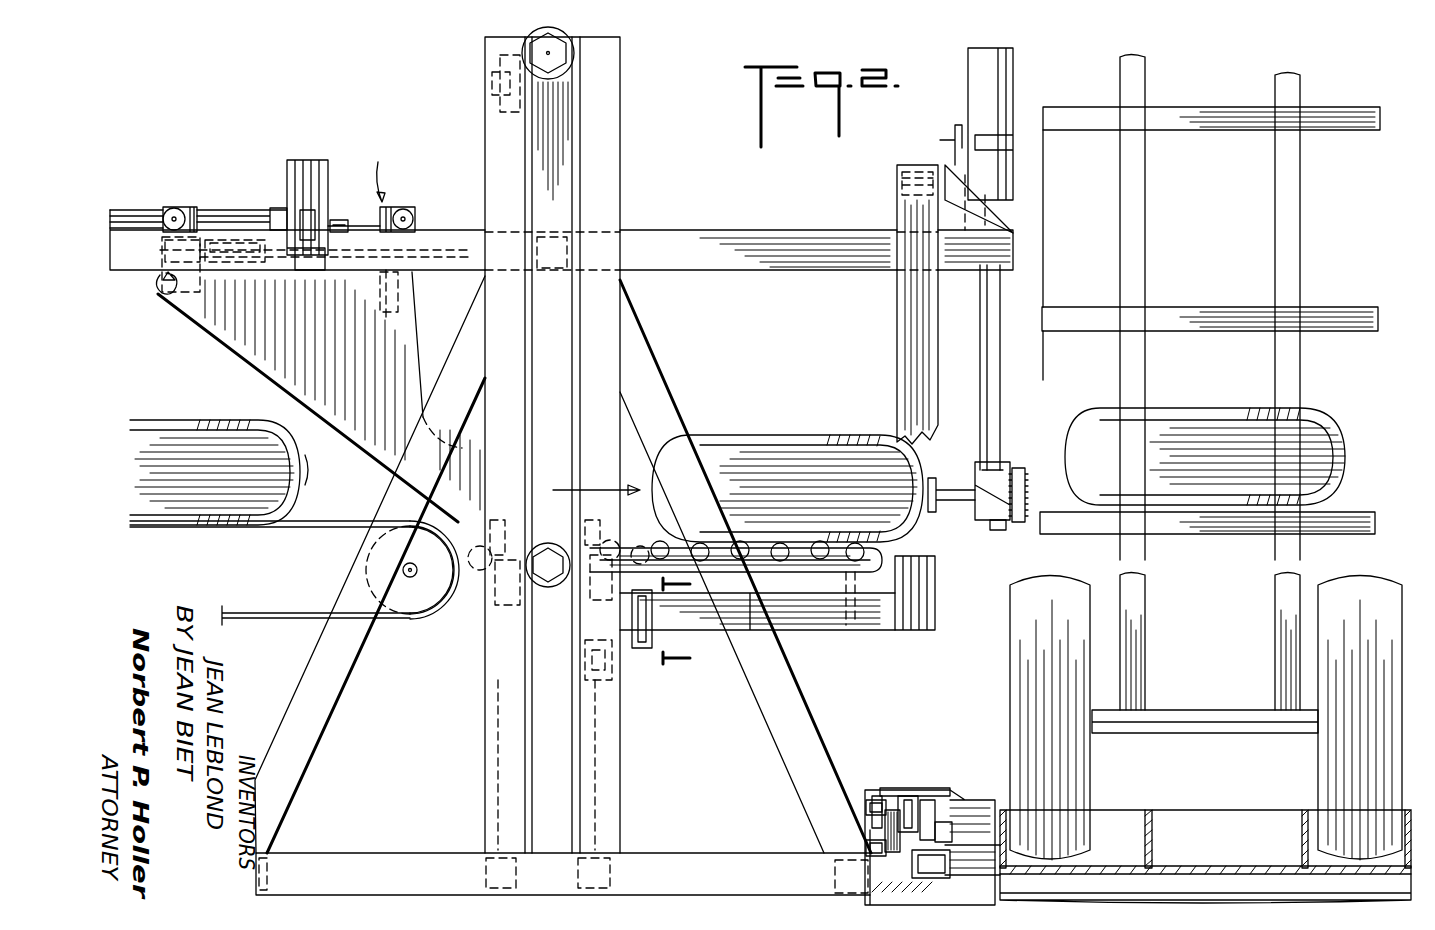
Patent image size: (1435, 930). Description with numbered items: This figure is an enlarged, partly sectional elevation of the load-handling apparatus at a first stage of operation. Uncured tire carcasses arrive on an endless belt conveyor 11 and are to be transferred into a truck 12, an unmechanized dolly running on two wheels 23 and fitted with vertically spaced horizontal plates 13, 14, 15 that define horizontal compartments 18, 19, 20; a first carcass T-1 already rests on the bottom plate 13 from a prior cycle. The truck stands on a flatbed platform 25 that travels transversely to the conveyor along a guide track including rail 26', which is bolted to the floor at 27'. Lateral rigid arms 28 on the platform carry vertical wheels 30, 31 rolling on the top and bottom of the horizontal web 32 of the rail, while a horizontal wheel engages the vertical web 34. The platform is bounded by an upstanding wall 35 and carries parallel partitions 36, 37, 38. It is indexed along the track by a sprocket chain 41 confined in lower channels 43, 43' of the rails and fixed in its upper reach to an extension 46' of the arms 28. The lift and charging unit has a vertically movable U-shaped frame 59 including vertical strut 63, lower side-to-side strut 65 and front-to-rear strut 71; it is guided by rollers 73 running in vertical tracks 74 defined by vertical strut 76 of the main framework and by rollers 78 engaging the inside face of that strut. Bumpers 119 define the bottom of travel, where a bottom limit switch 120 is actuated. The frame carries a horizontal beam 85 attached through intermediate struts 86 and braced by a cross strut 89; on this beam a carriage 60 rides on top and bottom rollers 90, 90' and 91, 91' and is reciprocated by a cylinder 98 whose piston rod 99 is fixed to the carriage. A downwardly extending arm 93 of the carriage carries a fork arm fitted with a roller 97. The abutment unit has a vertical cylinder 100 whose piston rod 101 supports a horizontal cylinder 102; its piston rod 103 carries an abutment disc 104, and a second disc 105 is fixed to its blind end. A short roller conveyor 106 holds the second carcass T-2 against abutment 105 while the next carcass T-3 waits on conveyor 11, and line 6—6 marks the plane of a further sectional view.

The section line 6 is at (684, 621).
The endless belt conveyor 11 is at (302, 512).
The truck 12 is at (1215, 708).
The bottom plate 13 is at (1355, 520).
The horizontal plate 14 is at (1350, 320).
The horizontal plate 15 is at (1345, 120).
The horizontal compartment 18 is at (1217, 385).
The horizontal compartment 19 is at (1216, 263).
The horizontal compartment 20 is at (1222, 88).
The wheels 23 is at (1012, 665).
The platform 25 is at (1206, 866).
The rail 26' is at (860, 830).
The floor bolting point 27' is at (1205, 886).
The lateral rigid arms 28 is at (958, 800).
The vertical wheel 30 is at (916, 796).
The vertical wheel 31 is at (948, 866).
The horizontal web 32 is at (952, 834).
The vertical web 34 is at (835, 875).
The upstanding wall 35 is at (1000, 815).
The partition 36 is at (1146, 812).
The partition 37 is at (1303, 812).
The partition 38 is at (1408, 812).
The sprocket chain 41 is at (878, 795).
The lower channel 43 is at (848, 801).
The lower channel 43' is at (855, 846).
The extension of the arms 46' is at (913, 759).
The frame 59 is at (896, 170).
The carriage 60 is at (375, 169).
The vertical strut 63 is at (897, 333).
The lower horizontal side to side strut 65 is at (936, 606).
The horizontal front to rear strut 71 is at (888, 631).
The rollers 73 is at (576, 67).
The vertical tracks 74 is at (572, 758).
The vertical strut 76 is at (485, 130).
The rollers 78 is at (498, 102).
The horizontal beam 85 is at (712, 242).
The intermediate horizontal struts 86 is at (575, 227).
The horizontal cross strut 89 is at (302, 160).
The top roller 90 is at (415, 203).
The bottom roller 90' is at (420, 294).
The top roller 91 is at (181, 200).
The bottom roller 91' is at (196, 285).
The lateral arm 93 is at (260, 352).
The roller 97 is at (850, 626).
The cylinder 98 is at (135, 210).
The piston rod 99 is at (343, 220).
The vertical double-acting cylinder 100 is at (1008, 68).
The piston rod 101 is at (1000, 372).
The horizontal double-acting cylinder 102 is at (984, 512).
The piston rod 103 is at (1002, 530).
The abutment disc 104 is at (1025, 470).
The second abutment disc 105 is at (936, 480).
The roller conveyor 106 is at (860, 560).
The bumpers 119 is at (584, 647).
The bottom limit switch 120 is at (644, 648).
The carcass T-1 is at (1318, 412).
The carcass T-2 is at (786, 436).
The carcass T-3 is at (228, 420).